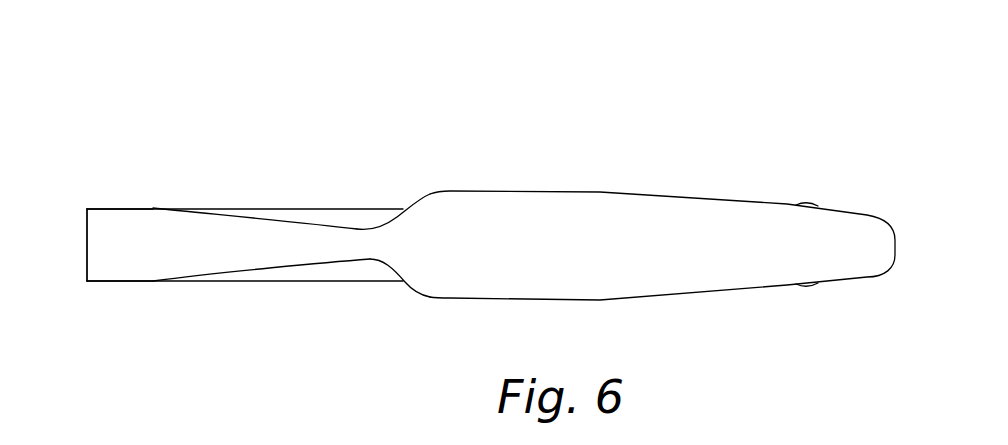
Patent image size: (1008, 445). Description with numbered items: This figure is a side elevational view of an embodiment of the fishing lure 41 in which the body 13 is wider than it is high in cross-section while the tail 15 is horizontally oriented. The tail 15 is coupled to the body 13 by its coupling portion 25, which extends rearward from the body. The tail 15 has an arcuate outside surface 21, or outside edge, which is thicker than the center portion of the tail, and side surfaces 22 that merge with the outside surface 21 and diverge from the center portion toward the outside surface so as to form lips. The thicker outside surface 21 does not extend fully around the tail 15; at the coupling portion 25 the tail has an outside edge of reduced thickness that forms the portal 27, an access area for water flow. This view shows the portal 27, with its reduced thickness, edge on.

The fishing lure 41 is at (783, 120).
The body 13 is at (575, 219).
The tail 15 is at (227, 205).
The outside surface 21 is at (145, 235).
The side surfaces 22 is at (304, 223).
The coupling portion 25 is at (358, 237).
The portal 27 is at (377, 245).